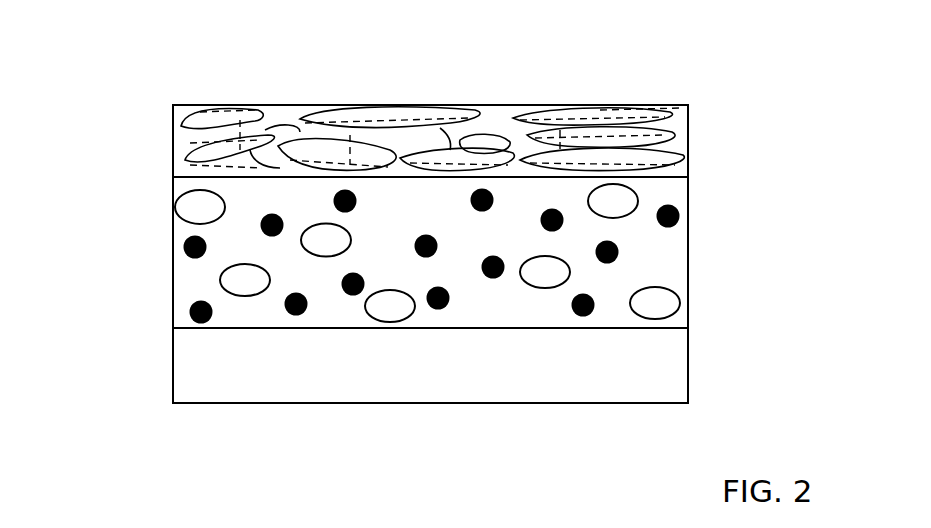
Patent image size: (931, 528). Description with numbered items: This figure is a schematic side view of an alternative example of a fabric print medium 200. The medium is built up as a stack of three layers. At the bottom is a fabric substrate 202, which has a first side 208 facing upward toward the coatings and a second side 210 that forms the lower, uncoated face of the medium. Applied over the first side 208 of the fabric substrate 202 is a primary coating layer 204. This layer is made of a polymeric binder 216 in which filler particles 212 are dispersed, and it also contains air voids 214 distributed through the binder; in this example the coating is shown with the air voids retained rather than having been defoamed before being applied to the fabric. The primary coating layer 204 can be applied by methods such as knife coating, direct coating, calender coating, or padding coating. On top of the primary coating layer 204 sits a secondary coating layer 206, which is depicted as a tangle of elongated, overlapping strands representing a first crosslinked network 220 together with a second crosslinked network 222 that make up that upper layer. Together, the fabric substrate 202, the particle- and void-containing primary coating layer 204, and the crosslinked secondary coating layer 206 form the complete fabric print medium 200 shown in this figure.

The fabric print medium 200 is at (146, 86).
The fabric substrate 202 is at (441, 376).
The primary coating layer 204 is at (710, 174).
The secondary coating layer 206 is at (702, 107).
The first side 208 is at (196, 334).
The second side 210 is at (196, 410).
The filler particles 212 is at (183, 245).
The air voids 214 is at (197, 209).
The polymeric binder 216 is at (197, 284).
The first crosslinked network 220 is at (355, 112).
The second crosslinked network 222 is at (432, 122).